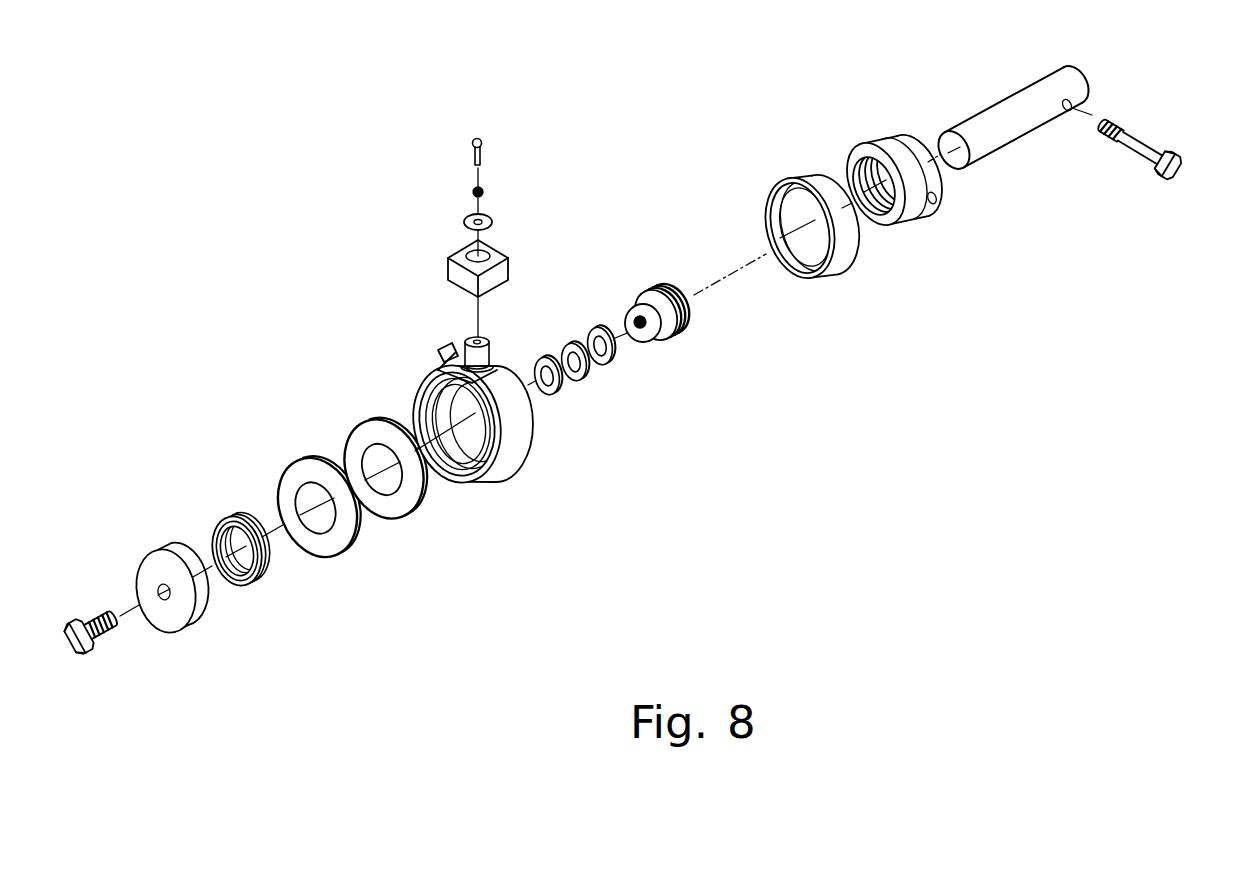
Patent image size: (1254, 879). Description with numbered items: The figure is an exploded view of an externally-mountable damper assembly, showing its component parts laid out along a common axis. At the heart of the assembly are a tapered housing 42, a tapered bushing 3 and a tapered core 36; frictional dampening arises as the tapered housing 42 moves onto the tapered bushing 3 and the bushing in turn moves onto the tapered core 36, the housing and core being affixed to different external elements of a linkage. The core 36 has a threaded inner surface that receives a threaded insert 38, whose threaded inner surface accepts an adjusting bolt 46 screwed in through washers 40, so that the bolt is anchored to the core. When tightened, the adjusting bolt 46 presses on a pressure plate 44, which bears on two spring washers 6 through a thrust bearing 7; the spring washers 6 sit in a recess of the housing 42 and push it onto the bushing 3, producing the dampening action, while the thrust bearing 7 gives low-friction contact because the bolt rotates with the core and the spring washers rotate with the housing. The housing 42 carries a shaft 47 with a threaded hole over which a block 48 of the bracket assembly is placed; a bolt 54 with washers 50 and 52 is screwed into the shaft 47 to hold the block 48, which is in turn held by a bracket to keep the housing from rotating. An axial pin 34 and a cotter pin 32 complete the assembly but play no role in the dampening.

The tapered bushing 3 is at (840, 270).
The spring washers 6 is at (353, 552).
The thrust bearing 7 is at (267, 582).
The cotter pin 32 is at (1130, 150).
The axial pin 34 is at (1017, 133).
The tapered core 36 is at (923, 220).
The threaded insert 38 is at (682, 333).
The washers 40 is at (558, 395).
The tapered housing 42 is at (517, 460).
The pressure plate 44 is at (203, 622).
The adjusting bolt 46 is at (95, 652).
The shaft 47 is at (491, 343).
The block 48 is at (453, 253).
The washer 50 is at (493, 214).
The washer 52 is at (474, 189).
The bolt 54 is at (488, 141).